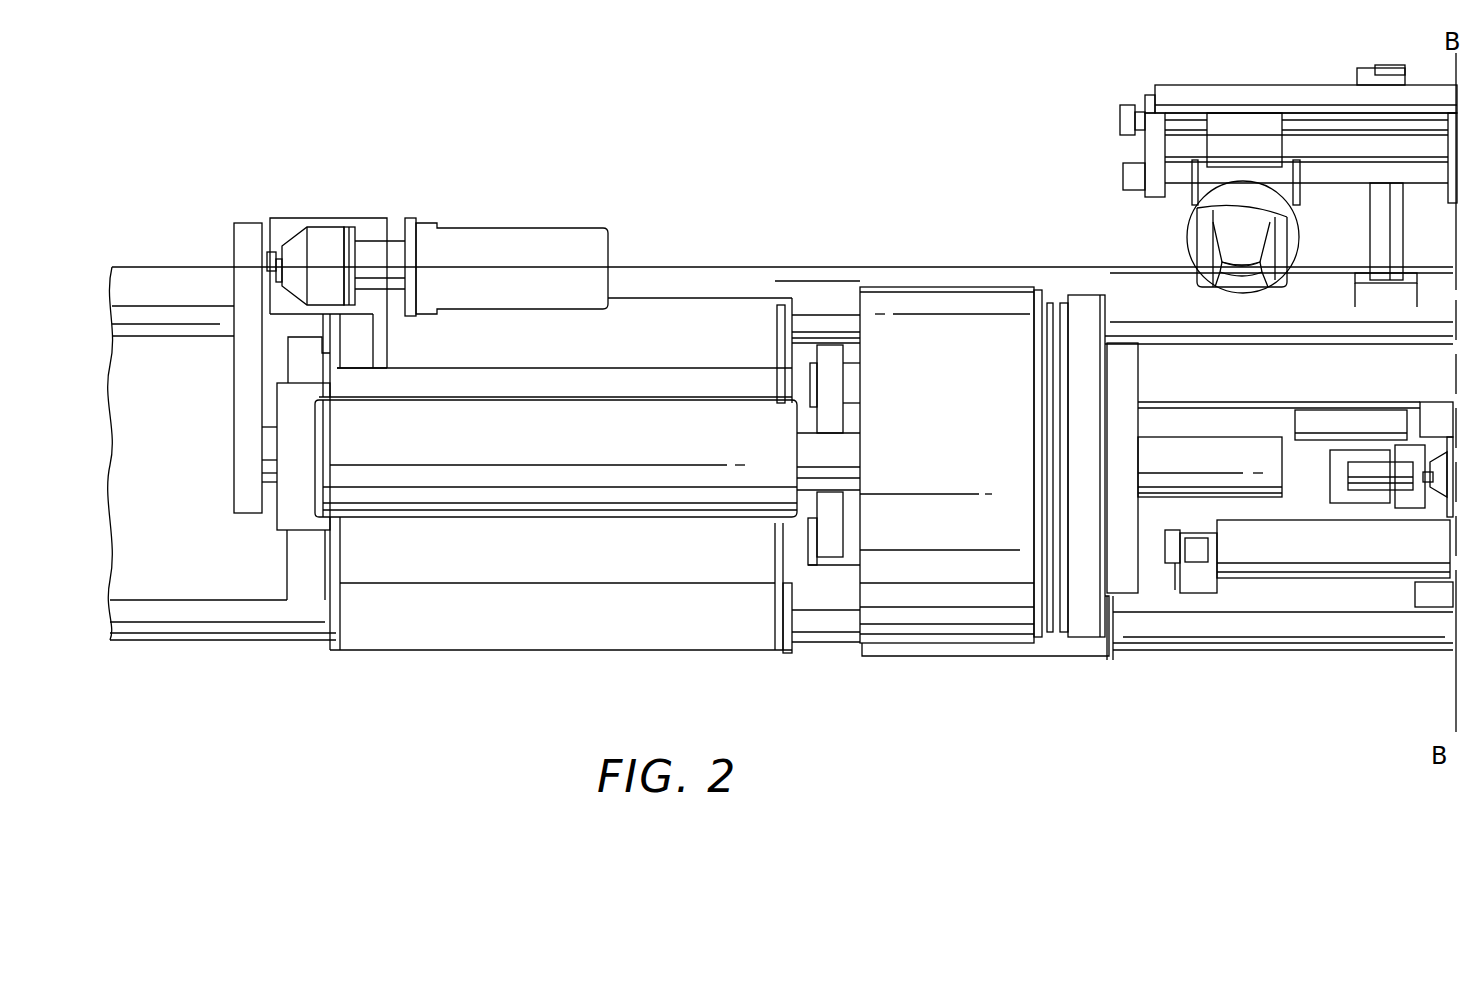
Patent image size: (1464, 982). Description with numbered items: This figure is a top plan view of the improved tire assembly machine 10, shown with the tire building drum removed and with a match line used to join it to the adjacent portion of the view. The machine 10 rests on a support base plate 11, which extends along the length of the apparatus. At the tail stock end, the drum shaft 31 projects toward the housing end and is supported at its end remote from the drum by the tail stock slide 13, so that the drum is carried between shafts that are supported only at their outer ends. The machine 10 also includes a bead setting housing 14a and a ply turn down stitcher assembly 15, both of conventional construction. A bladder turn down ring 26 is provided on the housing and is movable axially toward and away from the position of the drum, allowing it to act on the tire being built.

The tire building machine 10 is at (858, 208).
The support base plate 11 is at (1051, 268).
The tail stock slide 13 is at (708, 290).
The bead setting housing 14a is at (925, 286).
The ply turn down stitcher assembly 15 is at (1212, 70).
The bladder turn down ring 26 is at (1088, 295).
The drum shaft 31 is at (812, 472).